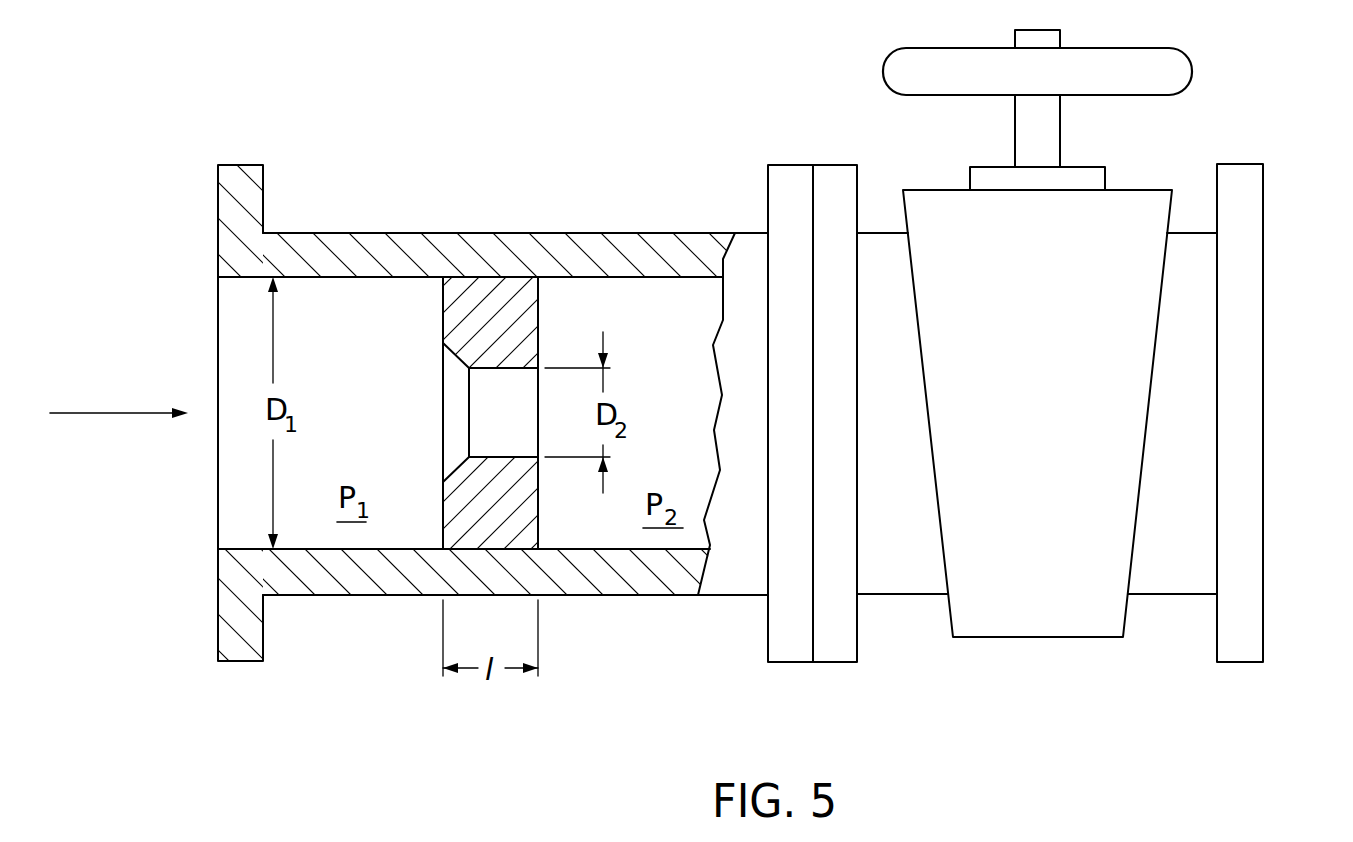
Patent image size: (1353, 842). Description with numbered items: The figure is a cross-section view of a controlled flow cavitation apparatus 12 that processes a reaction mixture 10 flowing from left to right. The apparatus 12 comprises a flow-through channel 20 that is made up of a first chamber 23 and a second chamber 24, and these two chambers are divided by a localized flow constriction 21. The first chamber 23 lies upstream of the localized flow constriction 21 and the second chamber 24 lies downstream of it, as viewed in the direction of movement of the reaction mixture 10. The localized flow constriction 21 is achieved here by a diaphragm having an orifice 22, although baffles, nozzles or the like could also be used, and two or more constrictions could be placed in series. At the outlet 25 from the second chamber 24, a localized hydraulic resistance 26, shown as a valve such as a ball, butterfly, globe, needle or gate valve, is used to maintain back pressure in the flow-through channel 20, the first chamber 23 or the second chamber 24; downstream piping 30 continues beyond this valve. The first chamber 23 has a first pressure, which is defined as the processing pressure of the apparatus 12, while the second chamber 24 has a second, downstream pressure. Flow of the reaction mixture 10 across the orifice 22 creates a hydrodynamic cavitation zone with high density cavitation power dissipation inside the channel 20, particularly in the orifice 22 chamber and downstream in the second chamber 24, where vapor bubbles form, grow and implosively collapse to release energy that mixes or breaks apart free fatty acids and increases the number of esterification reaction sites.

The reaction mixture 10 is at (84, 414).
The controlled flow cavitation apparatus 12 is at (316, 640).
The flow-through channel 20 is at (553, 245).
The localized flow constriction 21 is at (468, 313).
The orifice 22 is at (483, 413).
The first chamber 23 is at (255, 313).
The second chamber 24 is at (625, 300).
The outlet 25 is at (795, 348).
The localized hydraulic resistance 26 is at (1030, 622).
The downstream piping 30 is at (1352, 412).